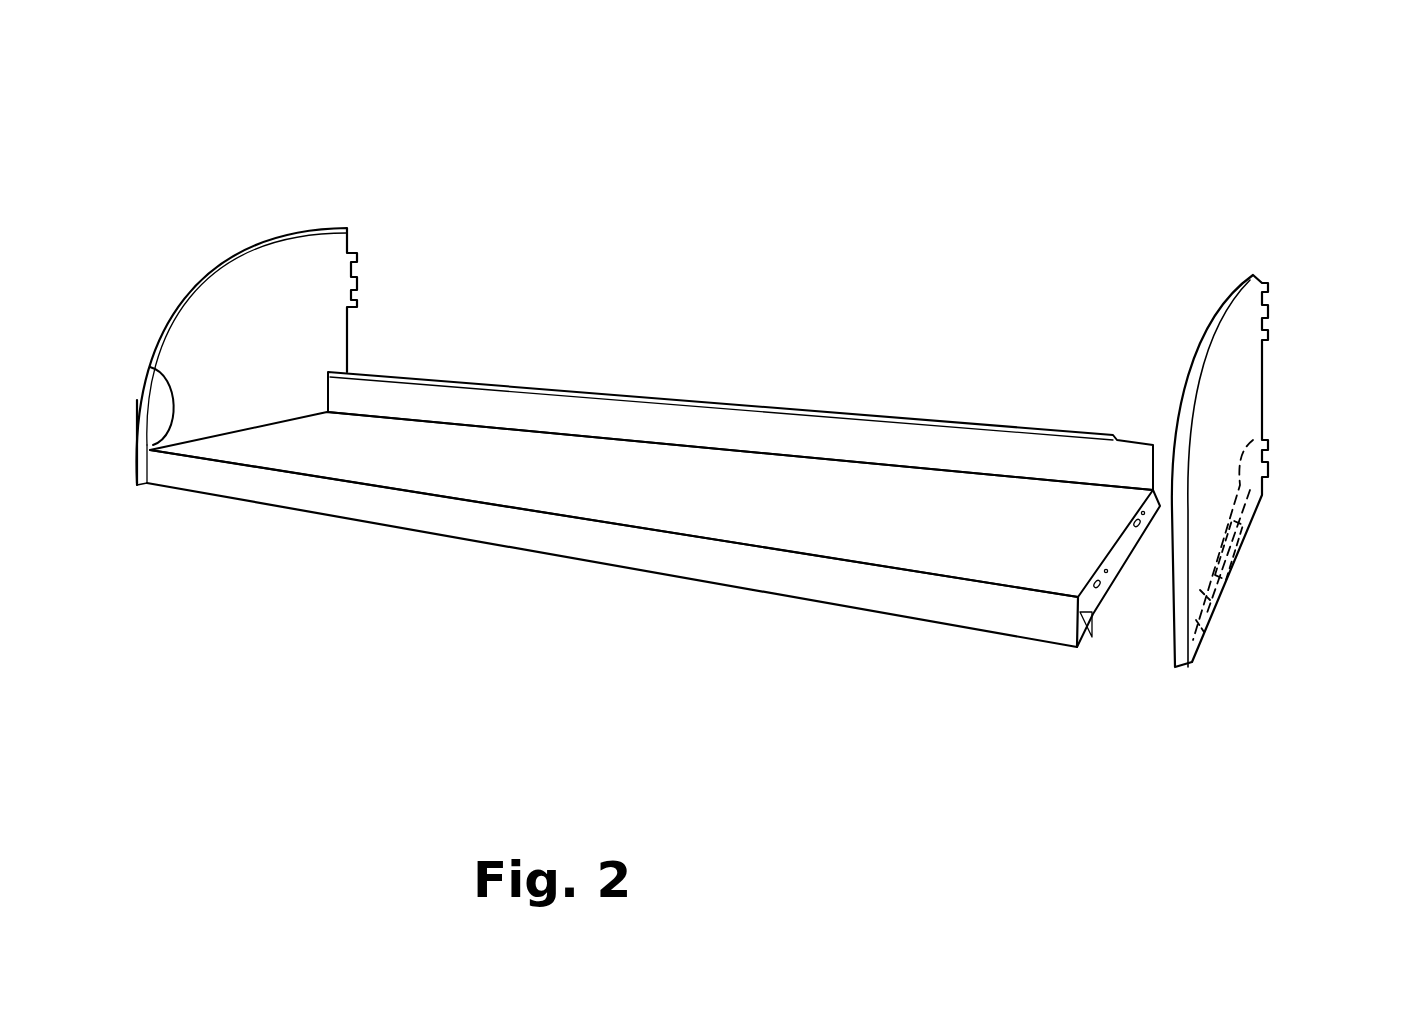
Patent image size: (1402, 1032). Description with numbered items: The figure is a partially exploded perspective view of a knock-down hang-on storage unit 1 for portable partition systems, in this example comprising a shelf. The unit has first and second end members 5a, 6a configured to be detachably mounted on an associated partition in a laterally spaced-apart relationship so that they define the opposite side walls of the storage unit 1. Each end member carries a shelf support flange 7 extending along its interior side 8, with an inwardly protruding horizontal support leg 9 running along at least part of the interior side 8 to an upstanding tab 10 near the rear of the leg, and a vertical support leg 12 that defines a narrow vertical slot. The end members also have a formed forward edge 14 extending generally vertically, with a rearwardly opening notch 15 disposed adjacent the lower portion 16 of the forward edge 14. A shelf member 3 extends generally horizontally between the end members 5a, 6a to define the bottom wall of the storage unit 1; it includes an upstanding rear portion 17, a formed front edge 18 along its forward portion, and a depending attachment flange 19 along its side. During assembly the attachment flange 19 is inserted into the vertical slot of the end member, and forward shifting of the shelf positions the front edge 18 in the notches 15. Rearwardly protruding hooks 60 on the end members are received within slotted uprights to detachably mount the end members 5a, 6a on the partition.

The knock-down hang-on storage unit 1 is at (823, 167).
The shelf member 3 is at (393, 467).
The first end member 5a is at (1240, 382).
The second end member 6a is at (709, 453).
The shelf support flange 7 is at (1220, 583).
The interior side 8 is at (255, 317).
The horizontal support leg 9 is at (1220, 528).
The upstanding tab 10 is at (1253, 440).
The vertical support leg 12 is at (1223, 558).
The forward edge 14 is at (143, 420).
The rearwardly opening notch 15 is at (150, 387).
The lower portion 16 is at (118, 432).
The upstanding rear portion 17 is at (733, 417).
The front edge 18 is at (680, 560).
The depending attachment flange 19 is at (1113, 553).
The rearwardly protruding hook 60 is at (357, 303).